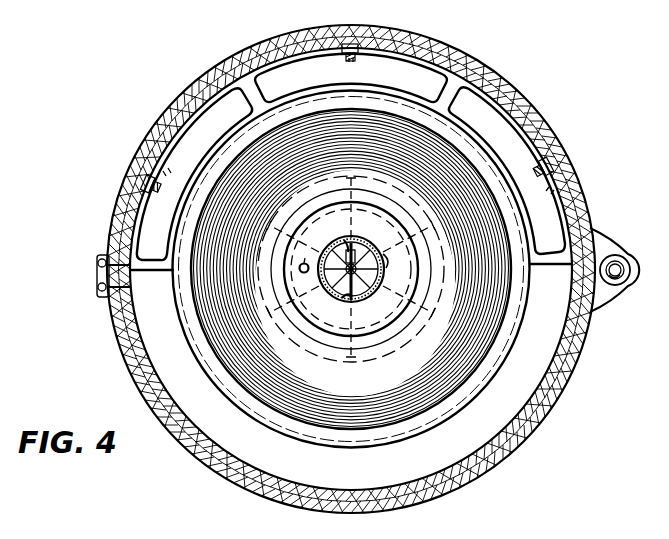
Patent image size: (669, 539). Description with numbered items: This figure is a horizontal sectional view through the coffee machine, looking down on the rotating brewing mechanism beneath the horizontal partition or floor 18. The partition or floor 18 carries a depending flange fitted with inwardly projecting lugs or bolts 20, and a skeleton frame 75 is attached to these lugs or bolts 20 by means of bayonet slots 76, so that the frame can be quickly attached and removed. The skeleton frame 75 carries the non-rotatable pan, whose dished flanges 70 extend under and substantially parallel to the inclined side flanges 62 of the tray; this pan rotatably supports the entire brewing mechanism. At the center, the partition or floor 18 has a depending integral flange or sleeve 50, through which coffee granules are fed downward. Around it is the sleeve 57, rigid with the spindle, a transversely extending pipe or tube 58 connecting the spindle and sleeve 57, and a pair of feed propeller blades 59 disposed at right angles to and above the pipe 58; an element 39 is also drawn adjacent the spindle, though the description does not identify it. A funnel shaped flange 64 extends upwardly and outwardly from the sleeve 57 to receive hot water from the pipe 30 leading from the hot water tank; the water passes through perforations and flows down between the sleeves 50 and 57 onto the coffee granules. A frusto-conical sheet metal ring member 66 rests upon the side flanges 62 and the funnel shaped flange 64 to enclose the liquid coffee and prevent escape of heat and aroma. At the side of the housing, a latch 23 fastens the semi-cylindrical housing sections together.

The horizontal partition or floor 18 is at (541, 128).
The lugs or bolts 20 is at (352, 62).
The latch 23 is at (103, 252).
The pipe 30 is at (305, 260).
The pawl 39 is at (347, 243).
The integral flange or sleeve 50 is at (362, 240).
The sleeve 57 is at (389, 260).
The transversely extending pipe or tube 58 is at (304, 277).
The feed propeller blades 59 is at (347, 298).
The inclined side flanges of the tray 62 is at (397, 108).
The funnel shaped flange 64 is at (393, 306).
The frusto-conical sheet metal ring member 66 is at (438, 285).
The dished flanges 70 is at (374, 93).
The skeleton frame 75 is at (147, 274).
The bayonet slots 76 is at (341, 60).